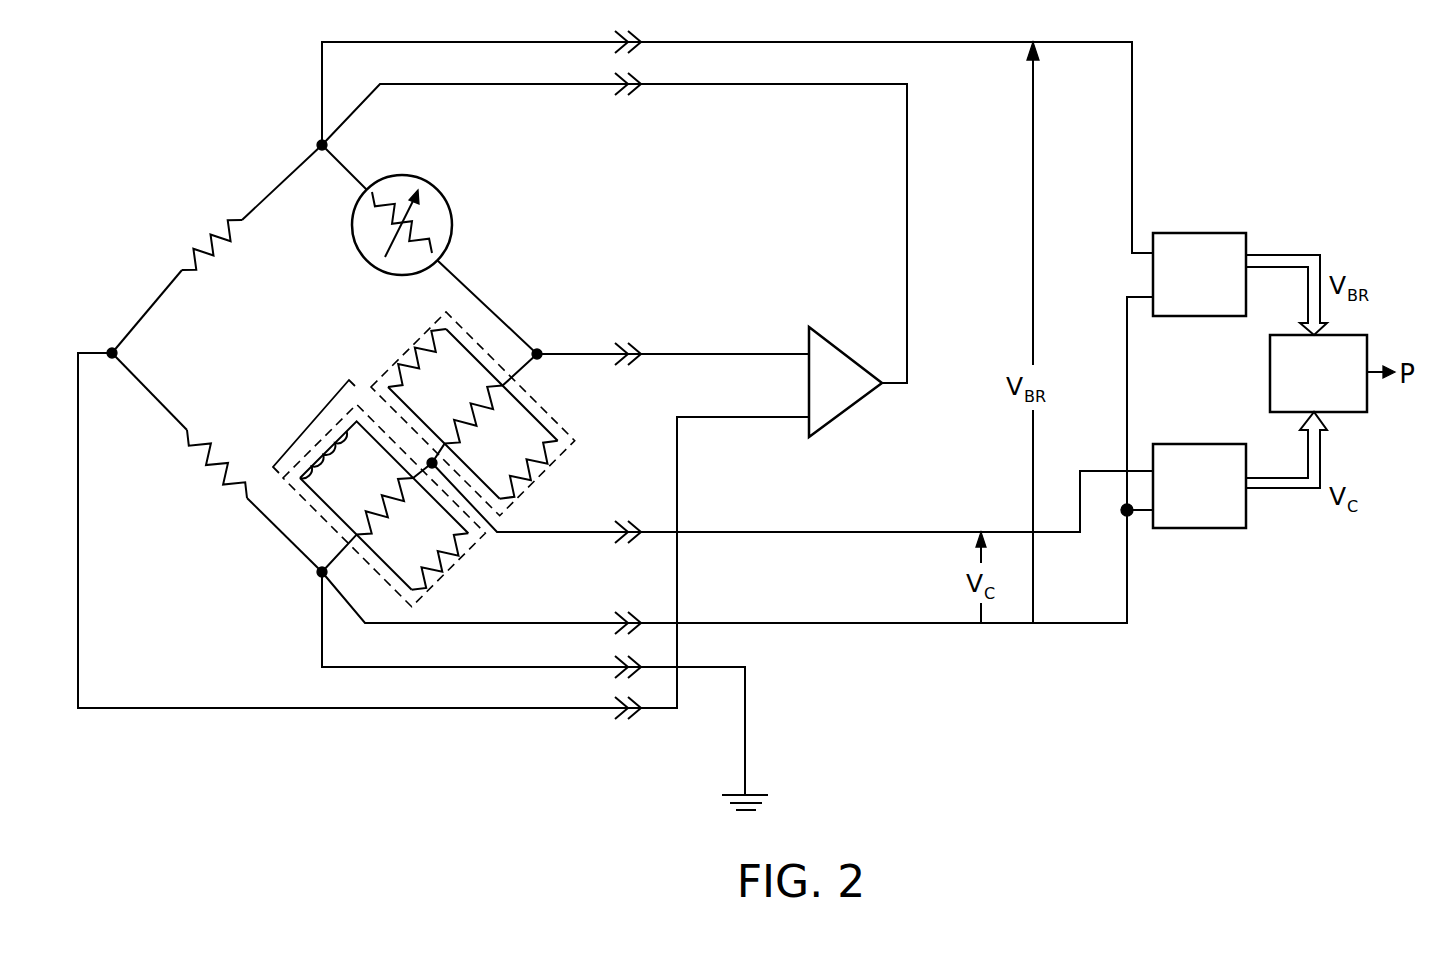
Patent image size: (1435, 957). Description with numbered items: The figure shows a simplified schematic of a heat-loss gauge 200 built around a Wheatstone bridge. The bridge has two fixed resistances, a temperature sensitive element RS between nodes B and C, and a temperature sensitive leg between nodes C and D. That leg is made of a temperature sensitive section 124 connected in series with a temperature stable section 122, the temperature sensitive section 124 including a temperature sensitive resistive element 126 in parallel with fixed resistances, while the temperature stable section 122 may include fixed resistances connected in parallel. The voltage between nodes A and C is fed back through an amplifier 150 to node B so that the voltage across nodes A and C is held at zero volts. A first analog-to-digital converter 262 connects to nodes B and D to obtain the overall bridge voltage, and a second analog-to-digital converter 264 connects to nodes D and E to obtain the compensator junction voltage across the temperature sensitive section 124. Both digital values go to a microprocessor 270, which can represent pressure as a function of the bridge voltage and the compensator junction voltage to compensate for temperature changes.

The heat-loss gauge 200 is at (178, 185).
The temperature stable section 122 is at (548, 478).
The temperature sensitive section 124 is at (466, 563).
The temperature sensitive resistive element 126 is at (297, 475).
The amplifier 150 is at (852, 410).
The first analog-to-digital converter 262 is at (1195, 233).
The second analog-to-digital converter 264 is at (1196, 528).
The microprocessor 270 is at (1270, 375).